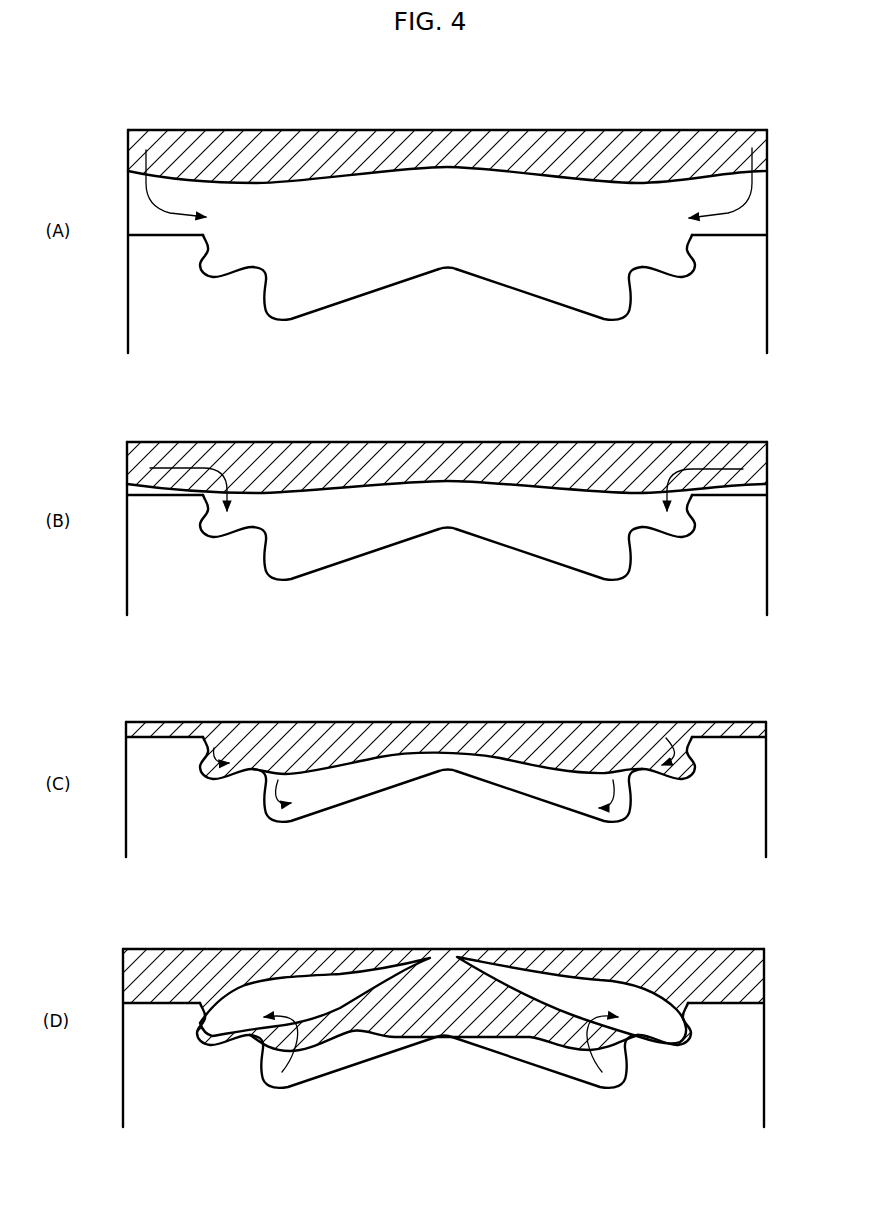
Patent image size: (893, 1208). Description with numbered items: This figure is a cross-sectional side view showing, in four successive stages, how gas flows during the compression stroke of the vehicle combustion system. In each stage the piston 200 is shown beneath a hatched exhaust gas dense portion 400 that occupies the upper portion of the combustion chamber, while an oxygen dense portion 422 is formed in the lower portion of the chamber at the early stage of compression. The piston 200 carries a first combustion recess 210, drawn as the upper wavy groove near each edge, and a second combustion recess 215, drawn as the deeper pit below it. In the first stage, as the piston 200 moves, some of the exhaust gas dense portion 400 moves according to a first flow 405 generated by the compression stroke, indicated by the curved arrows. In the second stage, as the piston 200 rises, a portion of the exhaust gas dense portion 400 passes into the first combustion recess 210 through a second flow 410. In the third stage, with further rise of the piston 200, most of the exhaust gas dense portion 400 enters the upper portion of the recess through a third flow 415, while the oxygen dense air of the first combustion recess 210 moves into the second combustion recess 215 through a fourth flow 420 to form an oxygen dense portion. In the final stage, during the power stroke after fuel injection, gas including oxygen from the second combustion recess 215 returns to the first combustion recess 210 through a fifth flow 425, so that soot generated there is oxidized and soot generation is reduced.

The piston 200 is at (183, 313).
The first combustion recess 210 is at (683, 262).
The second combustion recess 215 is at (620, 303).
The exhaust gas dense portion 400 is at (650, 140).
The first flow 405 is at (752, 200).
The second flow 410 is at (718, 466).
The third flow 415 is at (693, 758).
The fourth flow 420 is at (627, 803).
The oxygen dense portion 422 is at (513, 780).
The fifth flow 425 is at (630, 1034).